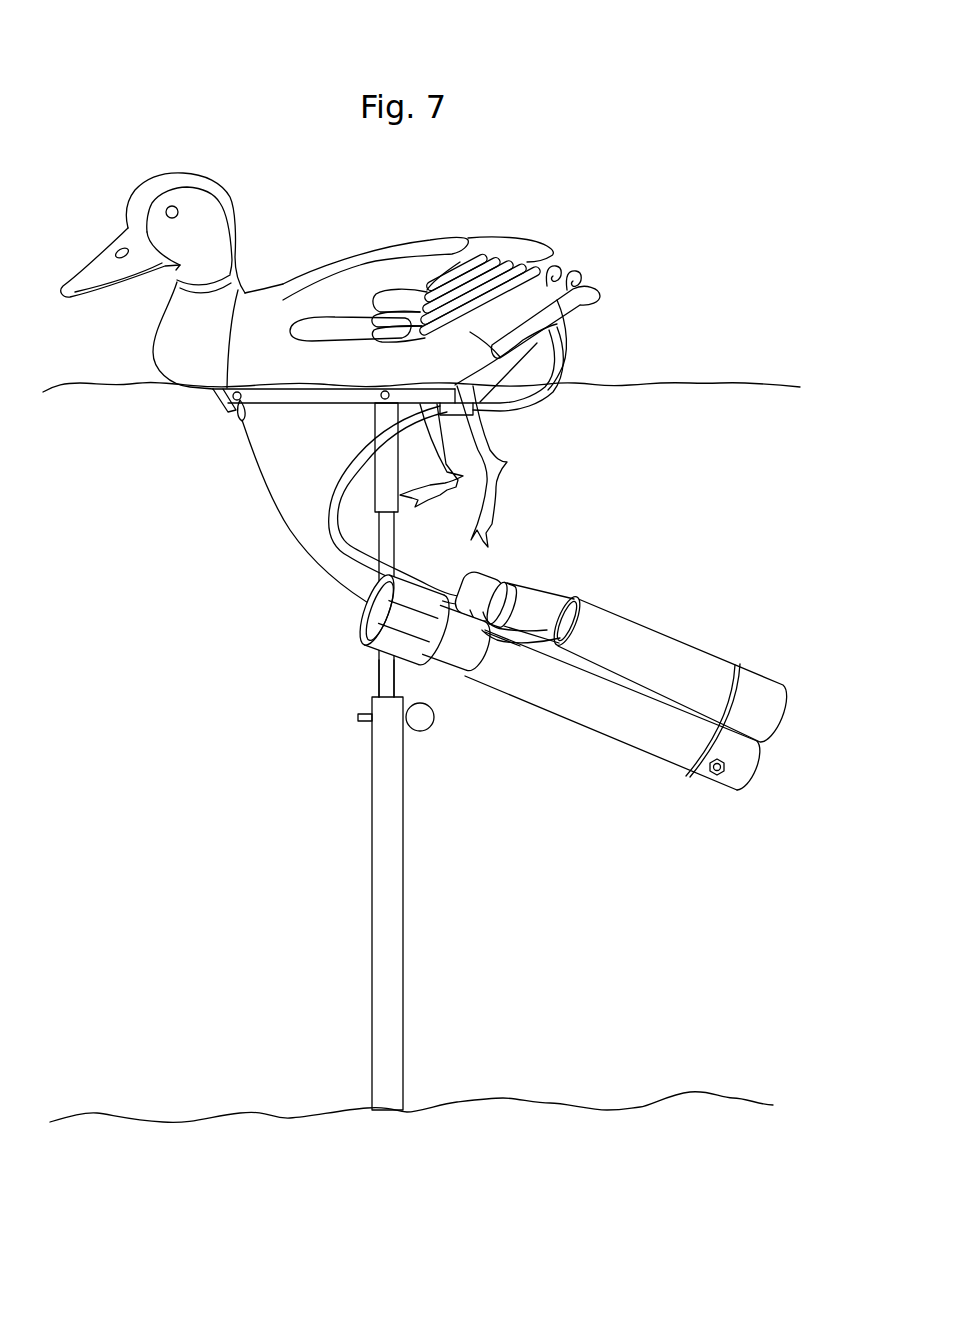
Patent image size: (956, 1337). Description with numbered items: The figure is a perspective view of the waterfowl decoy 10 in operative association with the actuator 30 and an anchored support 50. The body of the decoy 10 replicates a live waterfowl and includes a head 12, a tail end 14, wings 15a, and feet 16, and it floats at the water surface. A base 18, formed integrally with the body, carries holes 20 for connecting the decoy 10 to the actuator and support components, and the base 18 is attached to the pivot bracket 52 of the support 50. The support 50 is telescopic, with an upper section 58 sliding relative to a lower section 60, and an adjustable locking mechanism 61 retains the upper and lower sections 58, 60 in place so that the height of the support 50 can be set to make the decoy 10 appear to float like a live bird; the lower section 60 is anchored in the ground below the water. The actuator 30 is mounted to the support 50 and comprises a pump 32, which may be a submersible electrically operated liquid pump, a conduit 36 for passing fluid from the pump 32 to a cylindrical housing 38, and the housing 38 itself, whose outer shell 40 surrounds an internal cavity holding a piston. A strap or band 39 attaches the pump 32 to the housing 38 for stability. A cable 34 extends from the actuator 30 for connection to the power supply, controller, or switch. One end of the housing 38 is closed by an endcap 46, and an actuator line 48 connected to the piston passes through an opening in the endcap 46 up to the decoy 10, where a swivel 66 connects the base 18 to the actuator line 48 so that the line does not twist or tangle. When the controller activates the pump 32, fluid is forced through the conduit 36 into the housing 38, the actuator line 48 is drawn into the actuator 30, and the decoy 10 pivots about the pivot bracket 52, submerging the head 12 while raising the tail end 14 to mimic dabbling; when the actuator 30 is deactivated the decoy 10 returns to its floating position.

The decoy 10 is at (560, 215).
The head 12 is at (157, 193).
The tail end 14 is at (587, 285).
The wings 15a is at (400, 277).
The feet 16 is at (490, 495).
The base 18 is at (213, 401).
The holes 20 is at (228, 413).
The swivel 66 is at (238, 418).
The actuator line 48 is at (267, 497).
The pivot bracket 52 is at (375, 423).
The cable 34 is at (545, 402).
The conduit 36 is at (490, 585).
The actuator 30 is at (618, 667).
The pump 32 is at (712, 660).
The strap or band 39 is at (730, 703).
The outer shell 40 is at (638, 728).
The housing 38 is at (531, 696).
The endcap 46 is at (372, 623).
The upper section 58 is at (385, 681).
The support 50 is at (378, 903).
The locking mechanism 61 is at (424, 728).
The lower section 60 is at (398, 878).